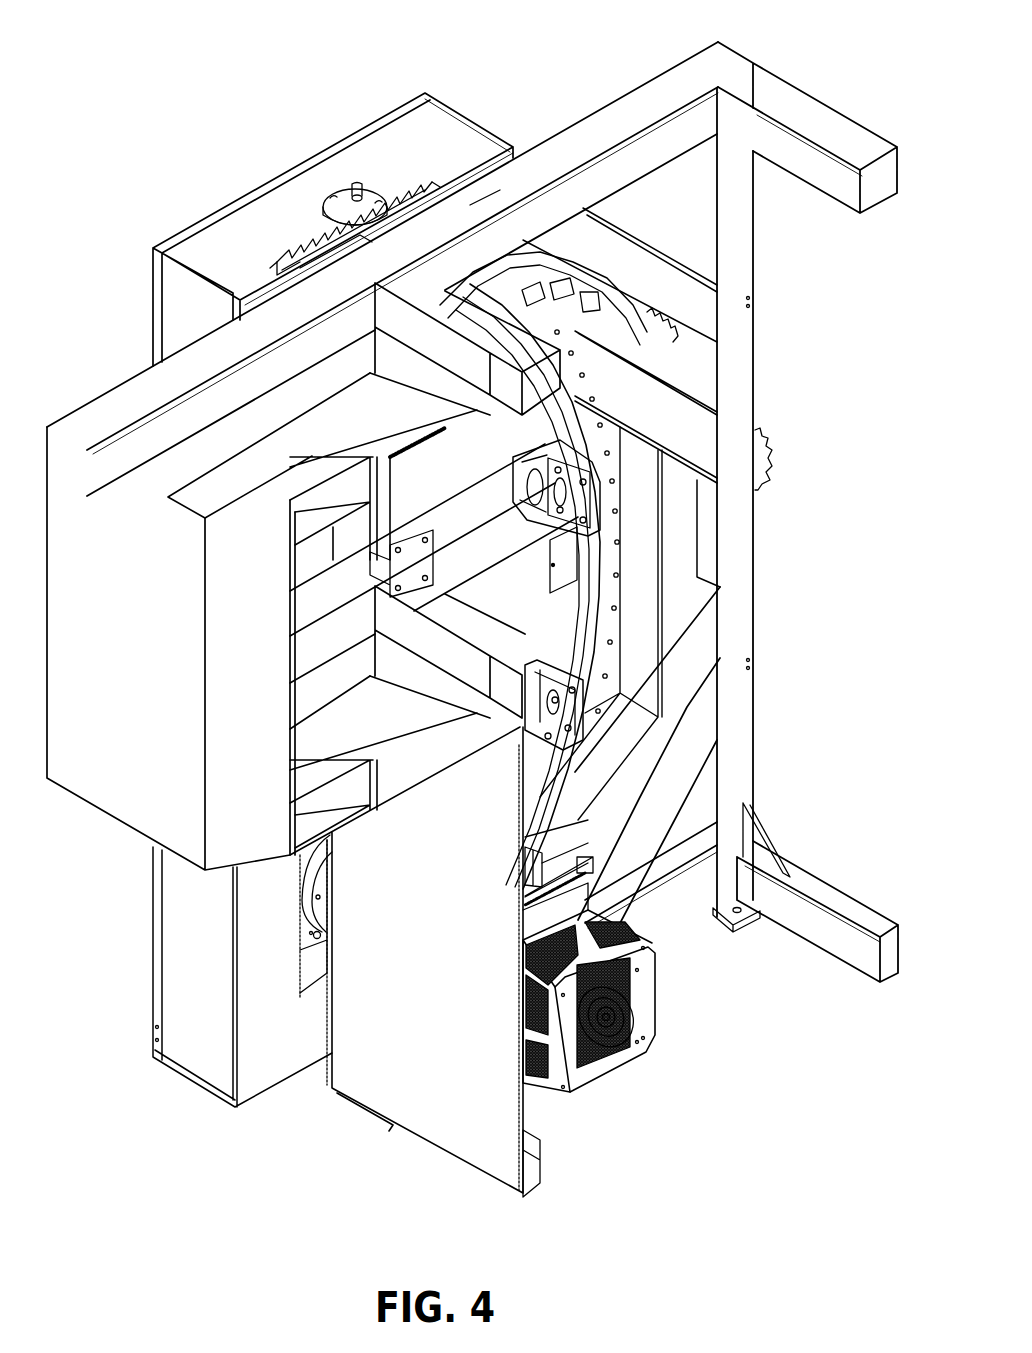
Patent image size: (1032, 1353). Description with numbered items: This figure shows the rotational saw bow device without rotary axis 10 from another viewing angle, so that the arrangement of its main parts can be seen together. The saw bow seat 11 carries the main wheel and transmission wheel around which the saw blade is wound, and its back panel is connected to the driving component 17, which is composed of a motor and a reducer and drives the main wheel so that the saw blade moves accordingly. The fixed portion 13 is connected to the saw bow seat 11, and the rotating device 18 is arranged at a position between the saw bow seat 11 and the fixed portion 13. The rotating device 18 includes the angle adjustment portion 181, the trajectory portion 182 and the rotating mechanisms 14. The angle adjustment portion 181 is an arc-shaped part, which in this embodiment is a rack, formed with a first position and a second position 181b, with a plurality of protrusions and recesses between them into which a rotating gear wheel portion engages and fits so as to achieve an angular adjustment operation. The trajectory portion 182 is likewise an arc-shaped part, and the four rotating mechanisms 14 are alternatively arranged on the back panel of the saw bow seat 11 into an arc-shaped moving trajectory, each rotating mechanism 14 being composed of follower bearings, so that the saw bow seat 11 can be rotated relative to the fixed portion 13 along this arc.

The rotational saw bow device without rotary axis 10 is at (136, 52).
The saw bow seat 11 is at (452, 128).
The fixed portion 13 is at (727, 62).
The rotating mechanism 14 is at (585, 510).
The driving component 17 is at (641, 1000).
The rotating device 18 is at (848, 448).
The angle adjustment portion 181 is at (350, 190).
The second position 181b is at (298, 243).
The trajectory portion 182 is at (607, 447).